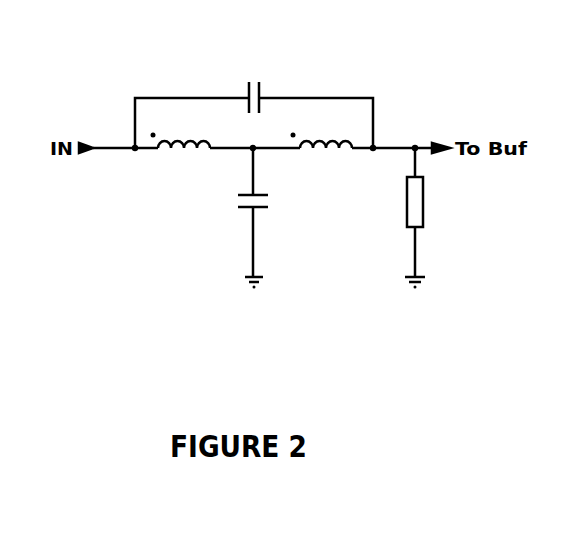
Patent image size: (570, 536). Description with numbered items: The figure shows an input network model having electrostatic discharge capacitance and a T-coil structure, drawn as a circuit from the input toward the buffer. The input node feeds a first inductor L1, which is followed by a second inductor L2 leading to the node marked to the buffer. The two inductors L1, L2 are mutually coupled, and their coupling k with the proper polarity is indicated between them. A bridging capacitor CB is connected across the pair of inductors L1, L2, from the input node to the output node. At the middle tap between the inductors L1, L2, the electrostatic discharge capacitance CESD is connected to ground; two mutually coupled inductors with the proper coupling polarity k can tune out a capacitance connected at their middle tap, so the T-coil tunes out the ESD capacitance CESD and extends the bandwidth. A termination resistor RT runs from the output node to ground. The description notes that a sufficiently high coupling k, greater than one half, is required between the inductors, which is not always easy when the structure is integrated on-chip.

The bridging capacitor CB is at (253, 85).
The first inductor L1 is at (184, 127).
The second inductor L2 is at (326, 127).
The coupling k is at (274, 132).
The electrostatic discharge capacitance CESD is at (278, 218).
The termination resistor RT is at (401, 218).